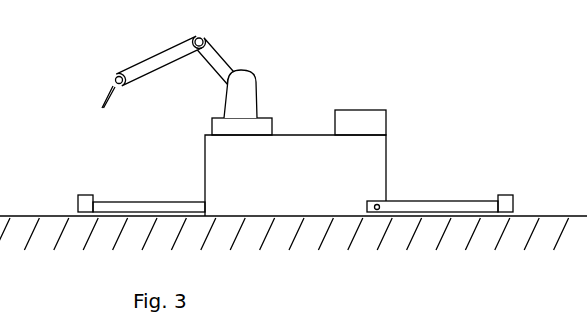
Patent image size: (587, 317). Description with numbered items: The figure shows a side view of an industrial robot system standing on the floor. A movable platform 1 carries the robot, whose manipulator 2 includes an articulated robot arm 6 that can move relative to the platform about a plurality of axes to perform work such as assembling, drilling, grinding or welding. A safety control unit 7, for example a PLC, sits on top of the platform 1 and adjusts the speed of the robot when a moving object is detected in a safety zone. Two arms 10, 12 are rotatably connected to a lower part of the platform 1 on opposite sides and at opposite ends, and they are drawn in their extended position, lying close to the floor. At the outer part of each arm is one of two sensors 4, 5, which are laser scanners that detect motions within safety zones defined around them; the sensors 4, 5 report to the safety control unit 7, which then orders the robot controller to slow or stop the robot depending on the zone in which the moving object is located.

The platform 1 is at (390, 157).
The manipulator 2 is at (233, 45).
The sensor 4 is at (507, 198).
The sensor 5 is at (83, 204).
The articulated robot arm 6 is at (143, 55).
The safety control unit 7 is at (358, 124).
The arm 10 is at (447, 200).
The arm 12 is at (152, 203).